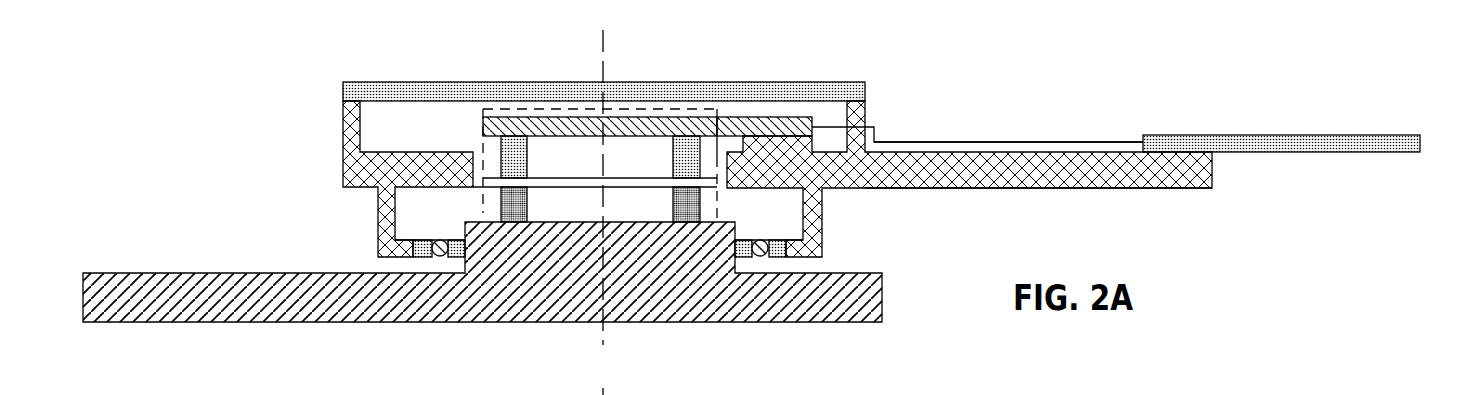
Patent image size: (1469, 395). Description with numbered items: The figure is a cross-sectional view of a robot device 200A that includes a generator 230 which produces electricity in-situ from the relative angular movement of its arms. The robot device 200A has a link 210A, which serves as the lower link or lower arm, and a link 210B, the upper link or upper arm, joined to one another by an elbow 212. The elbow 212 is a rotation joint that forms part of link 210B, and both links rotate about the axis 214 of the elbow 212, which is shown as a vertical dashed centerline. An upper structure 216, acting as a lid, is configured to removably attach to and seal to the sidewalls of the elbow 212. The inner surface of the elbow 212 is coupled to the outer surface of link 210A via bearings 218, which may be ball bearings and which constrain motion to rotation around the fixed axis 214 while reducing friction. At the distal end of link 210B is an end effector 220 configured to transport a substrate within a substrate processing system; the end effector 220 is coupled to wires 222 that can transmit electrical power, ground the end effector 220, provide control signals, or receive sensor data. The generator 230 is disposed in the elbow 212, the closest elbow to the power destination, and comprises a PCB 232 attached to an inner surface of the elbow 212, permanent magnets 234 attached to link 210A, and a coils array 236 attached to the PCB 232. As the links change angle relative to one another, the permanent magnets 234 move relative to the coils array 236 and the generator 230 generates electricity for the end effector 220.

The robot device 200A is at (185, 78).
The link 210A is at (148, 273).
The link 210B is at (1107, 188).
The elbow 212 is at (280, 165).
The axis 214 is at (603, 63).
The upper structure 216 is at (865, 82).
The bearings 218 is at (410, 243).
The end effector 220 is at (1280, 135).
The wires 222 is at (1083, 142).
The generator 230 is at (657, 109).
The PCB 232 is at (777, 117).
The permanent magnets 234 is at (566, 213).
The coils array 236 is at (566, 166).